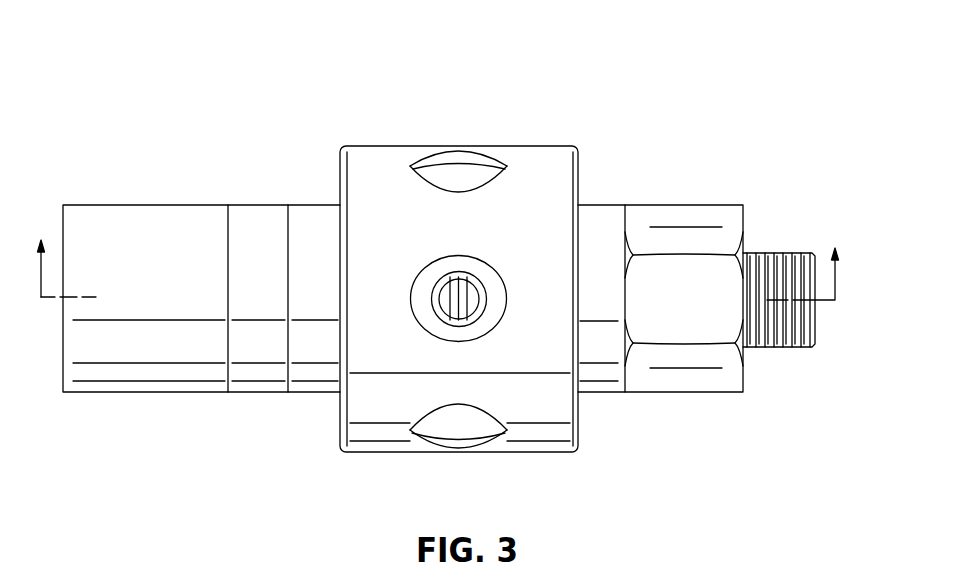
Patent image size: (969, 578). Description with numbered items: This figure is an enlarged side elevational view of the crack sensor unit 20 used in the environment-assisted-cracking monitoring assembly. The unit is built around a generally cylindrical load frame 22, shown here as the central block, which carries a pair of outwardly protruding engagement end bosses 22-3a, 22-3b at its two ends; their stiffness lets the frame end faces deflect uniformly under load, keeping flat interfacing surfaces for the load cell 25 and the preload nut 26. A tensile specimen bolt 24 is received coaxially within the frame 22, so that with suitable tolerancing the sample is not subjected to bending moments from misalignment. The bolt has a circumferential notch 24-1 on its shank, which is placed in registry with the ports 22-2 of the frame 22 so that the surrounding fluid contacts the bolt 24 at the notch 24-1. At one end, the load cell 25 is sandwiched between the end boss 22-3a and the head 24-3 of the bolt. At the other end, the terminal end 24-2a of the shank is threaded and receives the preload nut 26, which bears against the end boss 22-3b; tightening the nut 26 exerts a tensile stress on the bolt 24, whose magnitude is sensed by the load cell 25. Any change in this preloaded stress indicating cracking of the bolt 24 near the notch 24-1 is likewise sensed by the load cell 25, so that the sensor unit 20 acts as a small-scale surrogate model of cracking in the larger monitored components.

The crack sensor unit 20 is at (636, 132).
The load frame 22 is at (535, 241).
The ports 22-2 is at (457, 170).
The engagement end boss 22-3a is at (308, 375).
The engagement end boss 22-3b is at (598, 220).
The tensile specimen bolt 24 is at (165, 387).
The circumferential notch 24-1 is at (460, 302).
The terminal end 24-2a is at (778, 327).
The head 24-3 is at (175, 273).
The load cell 25 is at (256, 218).
The preload nut 26 is at (673, 304).